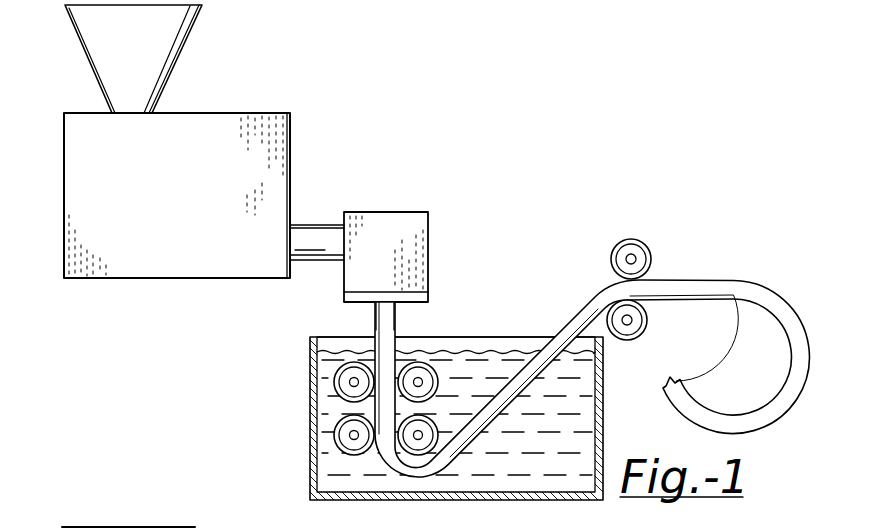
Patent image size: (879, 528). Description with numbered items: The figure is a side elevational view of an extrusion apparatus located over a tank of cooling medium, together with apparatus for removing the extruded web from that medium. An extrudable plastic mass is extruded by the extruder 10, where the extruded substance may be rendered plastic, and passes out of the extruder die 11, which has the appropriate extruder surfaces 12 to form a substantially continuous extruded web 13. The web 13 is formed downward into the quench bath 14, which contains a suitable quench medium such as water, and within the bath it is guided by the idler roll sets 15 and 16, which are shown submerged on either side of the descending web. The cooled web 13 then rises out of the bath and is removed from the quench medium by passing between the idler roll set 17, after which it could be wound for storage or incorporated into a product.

The extruder 10 is at (203, 117).
The extruder die 11 is at (430, 295).
The extruder surfaces 12 is at (373, 305).
The extruded web 13 is at (375, 323).
The quench bath 14 is at (473, 380).
The idler roll set 15 is at (335, 387).
The idler roll set 16 is at (335, 443).
The idler roll set 17 is at (630, 238).